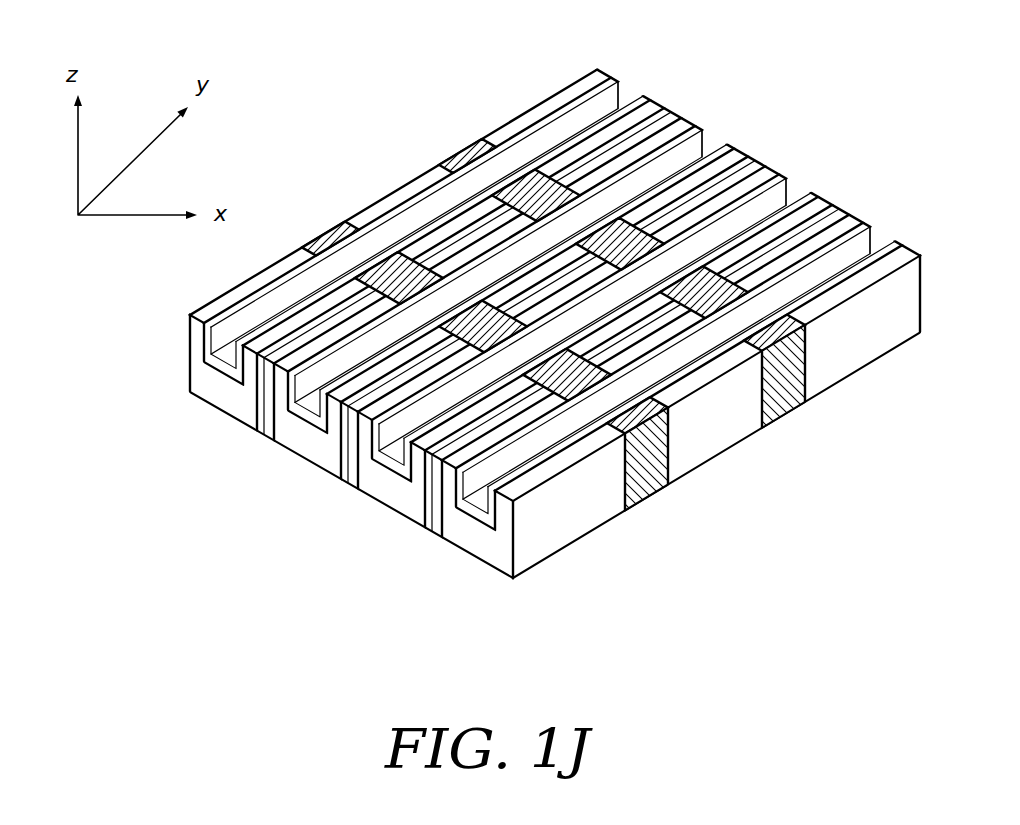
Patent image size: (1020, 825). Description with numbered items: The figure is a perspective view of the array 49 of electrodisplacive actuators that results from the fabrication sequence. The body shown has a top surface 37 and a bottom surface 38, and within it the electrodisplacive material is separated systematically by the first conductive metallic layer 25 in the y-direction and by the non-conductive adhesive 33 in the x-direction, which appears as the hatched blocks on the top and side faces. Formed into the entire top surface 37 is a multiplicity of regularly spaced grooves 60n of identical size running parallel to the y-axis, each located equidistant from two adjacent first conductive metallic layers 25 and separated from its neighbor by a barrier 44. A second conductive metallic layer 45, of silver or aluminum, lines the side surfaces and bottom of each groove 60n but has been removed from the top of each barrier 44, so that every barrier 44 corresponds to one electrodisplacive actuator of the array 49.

The first conductive metallic layer 25 is at (343, 468).
The non-conductive adhesive 33 is at (358, 468).
The top surface 37 is at (520, 125).
The bottom surface 38 is at (702, 437).
The barrier 44 is at (200, 352).
The second conductive metallic layer 45 is at (351, 483).
The array of electrodisplacive actuators 49 is at (824, 152).
The grooves 60n is at (307, 402).